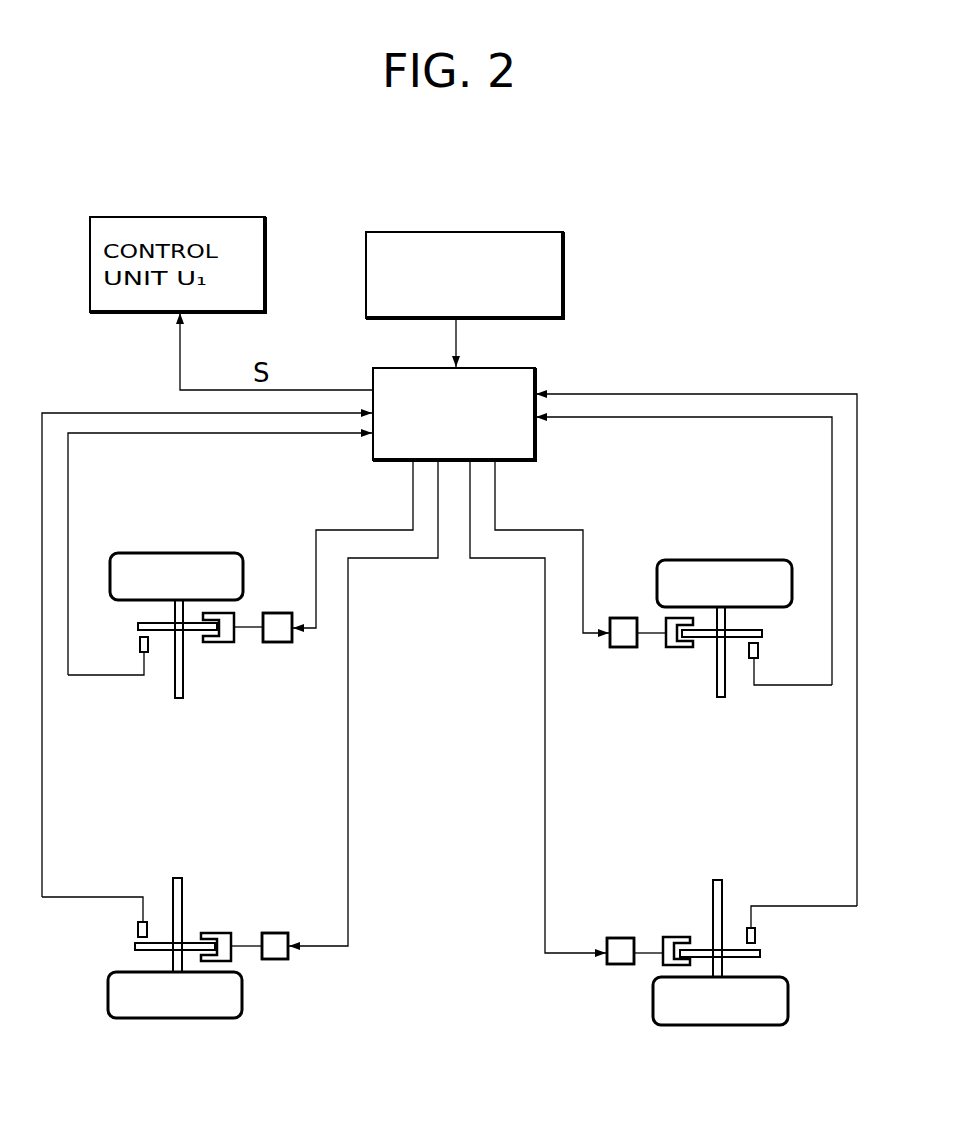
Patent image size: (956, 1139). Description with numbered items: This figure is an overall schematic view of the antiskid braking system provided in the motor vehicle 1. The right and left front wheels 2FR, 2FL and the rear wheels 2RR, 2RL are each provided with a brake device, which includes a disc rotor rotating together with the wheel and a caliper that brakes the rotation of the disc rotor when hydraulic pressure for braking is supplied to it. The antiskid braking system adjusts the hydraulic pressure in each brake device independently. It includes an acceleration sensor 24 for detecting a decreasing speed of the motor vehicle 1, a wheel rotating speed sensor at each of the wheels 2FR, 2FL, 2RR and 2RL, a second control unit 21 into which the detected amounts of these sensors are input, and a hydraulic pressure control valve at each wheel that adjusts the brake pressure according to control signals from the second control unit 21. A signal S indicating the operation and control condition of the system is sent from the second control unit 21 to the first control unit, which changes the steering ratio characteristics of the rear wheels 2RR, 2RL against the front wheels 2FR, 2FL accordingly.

The motor vehicle 1 is at (726, 359).
The control unit U2 21 is at (599, 377).
The acceleration sensor 24 is at (563, 270).
The right front wheel 2FR is at (181, 553).
The left front wheel 2FL is at (178, 1018).
The right rear wheel 2RR is at (732, 560).
The left rear wheel 2RL is at (725, 1025).